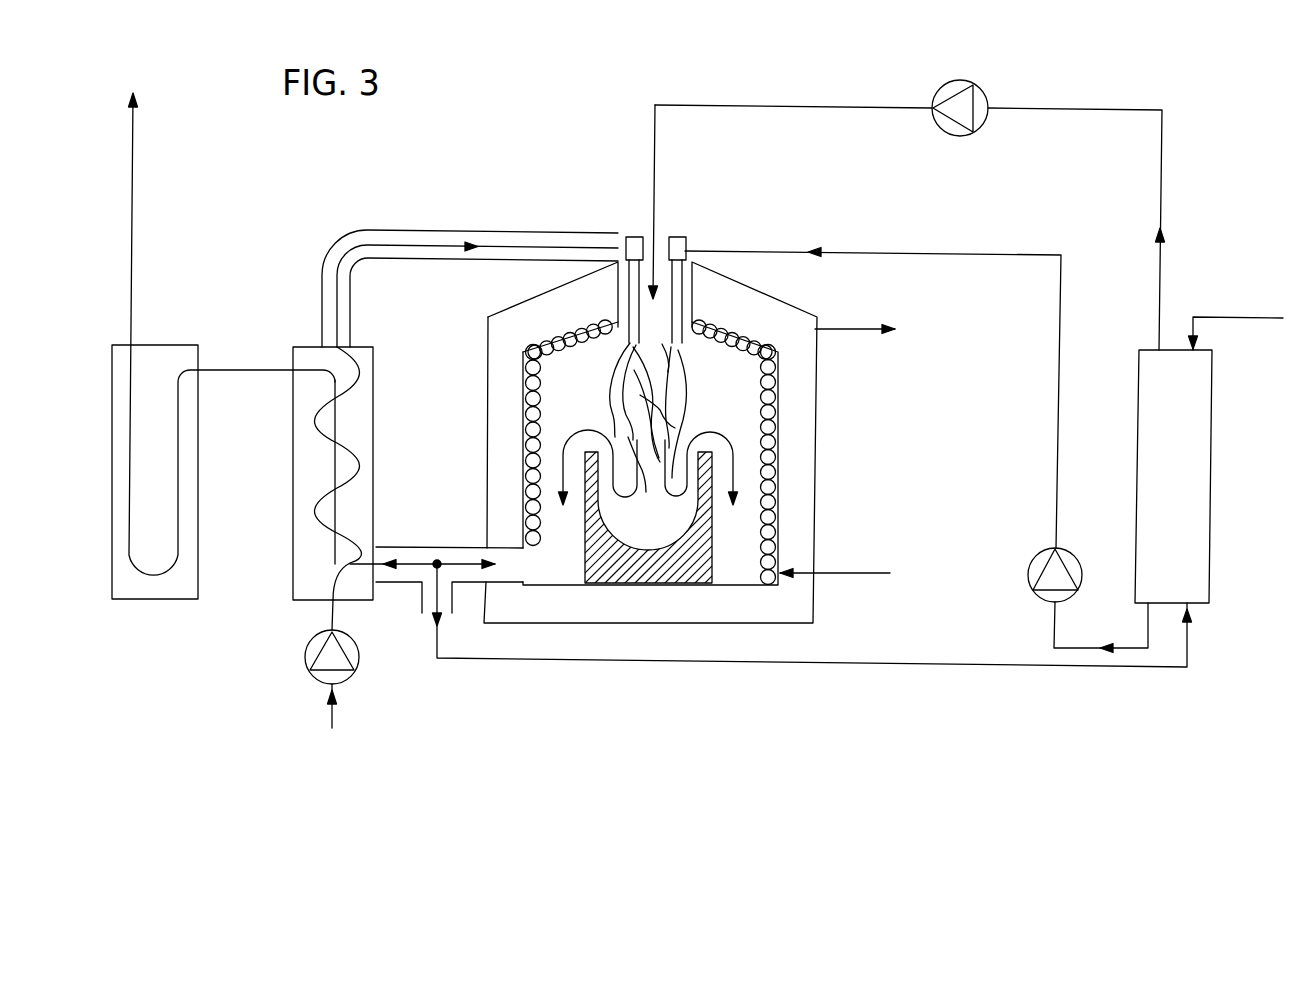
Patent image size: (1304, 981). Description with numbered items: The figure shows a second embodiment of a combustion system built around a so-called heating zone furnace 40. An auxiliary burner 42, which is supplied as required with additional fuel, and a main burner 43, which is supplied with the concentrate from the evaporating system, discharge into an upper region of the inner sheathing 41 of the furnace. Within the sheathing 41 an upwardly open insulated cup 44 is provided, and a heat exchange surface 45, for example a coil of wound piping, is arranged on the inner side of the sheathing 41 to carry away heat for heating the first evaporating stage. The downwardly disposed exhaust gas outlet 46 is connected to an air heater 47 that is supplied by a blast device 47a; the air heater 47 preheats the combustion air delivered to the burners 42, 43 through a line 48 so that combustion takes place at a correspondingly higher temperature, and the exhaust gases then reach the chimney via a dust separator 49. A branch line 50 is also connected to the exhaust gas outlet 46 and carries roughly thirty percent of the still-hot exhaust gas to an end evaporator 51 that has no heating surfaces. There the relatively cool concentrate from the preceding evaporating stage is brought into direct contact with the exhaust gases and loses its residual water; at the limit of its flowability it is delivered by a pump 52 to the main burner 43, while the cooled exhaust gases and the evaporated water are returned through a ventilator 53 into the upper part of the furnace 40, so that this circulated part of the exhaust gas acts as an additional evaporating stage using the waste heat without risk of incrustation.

The heating zone furnace 40 is at (833, 391).
The inner sheathing 41 is at (780, 418).
The auxiliary burner 42 is at (634, 237).
The main burner 43 is at (677, 237).
The insulated cup 44 is at (708, 566).
The heat exchange surface 45 is at (776, 450).
The exhaust gas outlet 46 is at (516, 571).
The air heater 47 is at (366, 444).
The blast device 47a is at (358, 664).
The line 48 is at (368, 231).
The dust separator 49 is at (189, 473).
The branch line 50 is at (680, 663).
The end evaporator 51 is at (1199, 481).
The pump 52 is at (1036, 562).
The ventilator 53 is at (980, 100).